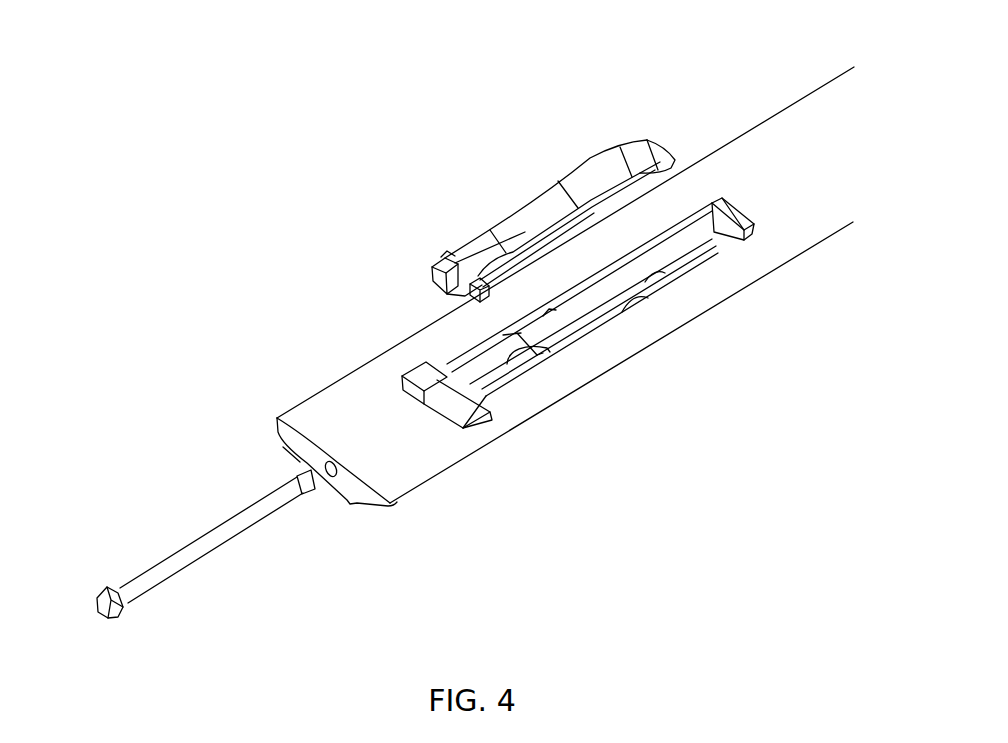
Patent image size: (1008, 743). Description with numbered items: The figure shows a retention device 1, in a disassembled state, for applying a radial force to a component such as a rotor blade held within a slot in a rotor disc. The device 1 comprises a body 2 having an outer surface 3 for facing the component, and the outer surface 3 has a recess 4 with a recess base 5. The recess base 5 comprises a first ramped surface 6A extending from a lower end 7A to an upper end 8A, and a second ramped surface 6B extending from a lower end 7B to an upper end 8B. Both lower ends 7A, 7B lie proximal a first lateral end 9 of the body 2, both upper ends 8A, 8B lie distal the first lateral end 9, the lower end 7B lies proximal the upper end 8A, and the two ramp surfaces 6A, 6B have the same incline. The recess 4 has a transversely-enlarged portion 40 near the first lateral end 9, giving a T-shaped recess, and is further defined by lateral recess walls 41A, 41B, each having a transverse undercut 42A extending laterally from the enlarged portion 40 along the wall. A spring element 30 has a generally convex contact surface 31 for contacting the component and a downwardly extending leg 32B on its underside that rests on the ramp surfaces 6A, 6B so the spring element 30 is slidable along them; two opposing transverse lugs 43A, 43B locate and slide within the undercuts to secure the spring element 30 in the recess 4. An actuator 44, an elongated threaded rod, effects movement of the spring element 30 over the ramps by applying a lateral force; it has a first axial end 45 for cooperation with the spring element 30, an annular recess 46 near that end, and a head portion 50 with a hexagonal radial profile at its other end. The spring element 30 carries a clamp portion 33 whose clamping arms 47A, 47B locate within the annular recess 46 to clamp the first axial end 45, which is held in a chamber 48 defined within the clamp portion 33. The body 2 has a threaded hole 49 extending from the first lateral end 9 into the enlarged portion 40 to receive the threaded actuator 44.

The retention device 1 is at (215, 141).
The body 2 is at (430, 477).
The outer surface 3 is at (640, 338).
The recess 4 is at (722, 250).
The recess base 5 is at (555, 325).
The first ramped surface 6A is at (487, 382).
The second ramped surface 6B is at (715, 230).
The lower end 7A is at (443, 393).
The lower end 7B is at (678, 272).
The upper end 8A is at (545, 342).
The upper end 8B is at (745, 223).
The first lateral end 9 is at (312, 425).
The spring element 30 is at (605, 131).
The contact surface 31 is at (524, 218).
The downwardly extending leg 32B is at (674, 158).
The clamp portion 33 is at (389, 199).
The transversely-enlarged portion 40 is at (490, 422).
The lateral recess wall 41A is at (547, 312).
The lateral recess wall 41B is at (655, 294).
The transverse undercut 42A is at (428, 374).
The transverse lug 43A is at (441, 257).
The transverse lug 43B is at (543, 243).
The actuator 44 is at (207, 547).
The first axial end 45 is at (317, 488).
The annular recess 46 is at (305, 494).
The clamping arm 47A is at (428, 265).
The clamping arm 47B is at (436, 288).
The chamber 48 is at (458, 274).
The threaded hole 49 is at (295, 465).
The head portion 50 is at (105, 612).